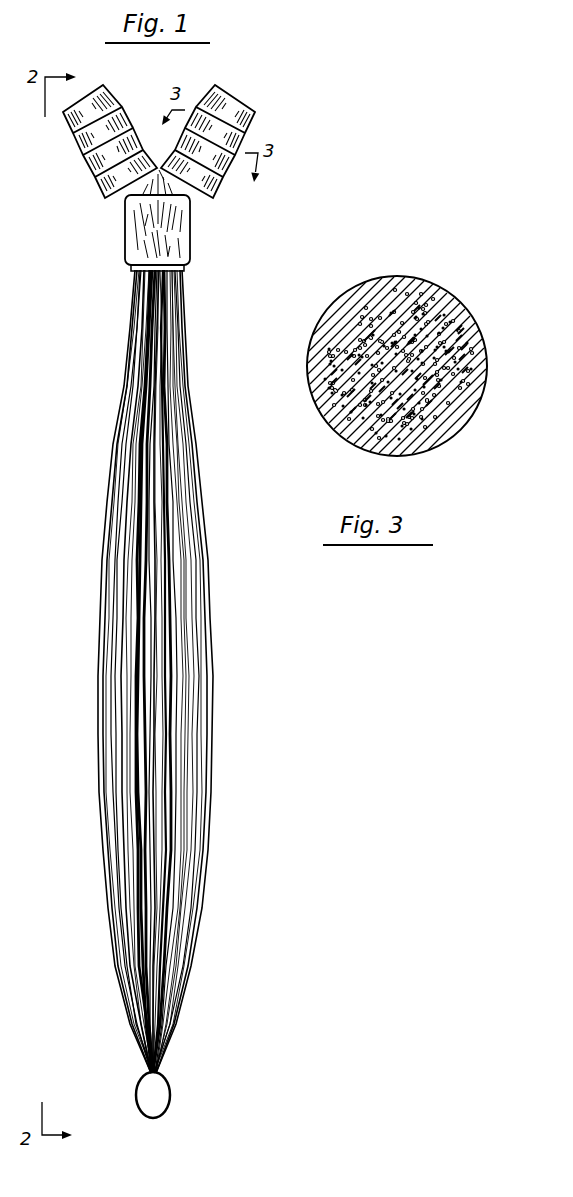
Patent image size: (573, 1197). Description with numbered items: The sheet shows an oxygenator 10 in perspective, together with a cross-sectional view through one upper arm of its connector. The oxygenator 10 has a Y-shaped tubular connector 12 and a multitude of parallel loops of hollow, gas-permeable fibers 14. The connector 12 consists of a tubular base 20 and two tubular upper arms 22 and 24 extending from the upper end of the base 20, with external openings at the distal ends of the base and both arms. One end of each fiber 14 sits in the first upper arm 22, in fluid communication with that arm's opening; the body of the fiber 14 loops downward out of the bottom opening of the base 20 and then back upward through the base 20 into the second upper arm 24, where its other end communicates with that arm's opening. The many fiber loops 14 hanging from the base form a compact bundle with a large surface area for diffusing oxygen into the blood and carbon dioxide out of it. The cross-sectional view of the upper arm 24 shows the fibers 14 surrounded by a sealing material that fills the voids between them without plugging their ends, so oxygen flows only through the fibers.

In FIG. 1, the oxygenator 10 is at (106, 426).
In FIG. 1, the Y-shaped tubular connector 12 is at (100, 237).
In FIG. 1, the hollow gas-permeable fibers 14 is at (102, 567).
In FIG. 3, the hollow gas-permeable fibers 14 is at (345, 310).
In FIG. 1, the tubular base 20 is at (125, 253).
In FIG. 1, the first upper arm 22 is at (82, 156).
In FIG. 1, the second upper arm 24 is at (253, 117).
In FIG. 3, the second upper arm 24 is at (430, 292).